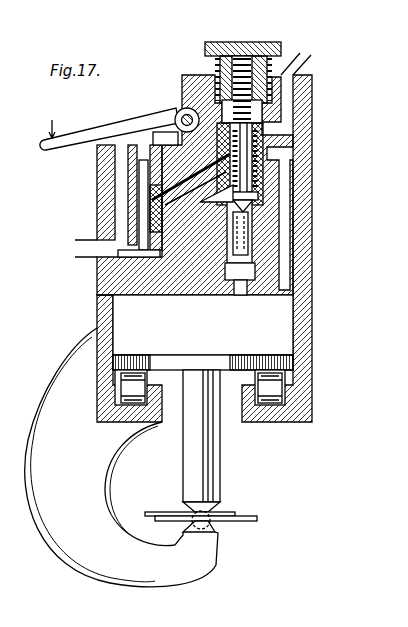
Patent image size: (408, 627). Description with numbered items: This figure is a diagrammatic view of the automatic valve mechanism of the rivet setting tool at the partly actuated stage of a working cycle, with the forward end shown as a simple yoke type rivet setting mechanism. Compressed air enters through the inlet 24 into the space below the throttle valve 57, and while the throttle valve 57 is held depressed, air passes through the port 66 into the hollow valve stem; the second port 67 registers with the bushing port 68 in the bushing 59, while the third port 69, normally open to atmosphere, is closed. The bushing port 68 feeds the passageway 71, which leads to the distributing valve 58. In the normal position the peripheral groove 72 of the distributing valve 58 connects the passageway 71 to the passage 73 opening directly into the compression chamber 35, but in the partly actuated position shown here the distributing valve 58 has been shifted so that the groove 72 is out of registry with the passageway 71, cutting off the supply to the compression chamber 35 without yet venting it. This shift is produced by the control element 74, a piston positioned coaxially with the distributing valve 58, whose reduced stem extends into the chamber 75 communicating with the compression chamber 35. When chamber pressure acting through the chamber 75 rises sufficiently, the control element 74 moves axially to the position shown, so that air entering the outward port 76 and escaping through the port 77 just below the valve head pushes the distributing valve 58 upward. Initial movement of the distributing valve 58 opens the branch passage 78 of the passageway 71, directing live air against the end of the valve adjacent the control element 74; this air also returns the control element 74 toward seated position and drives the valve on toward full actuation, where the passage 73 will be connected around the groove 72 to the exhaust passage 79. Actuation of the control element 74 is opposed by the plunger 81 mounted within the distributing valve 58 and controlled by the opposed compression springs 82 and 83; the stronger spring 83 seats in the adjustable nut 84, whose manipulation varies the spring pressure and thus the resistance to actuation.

The compressed air inlet 24 is at (85, 247).
The compression chamber 35 is at (196, 333).
The throttle valve 57 is at (155, 254).
The distributing valve 58 is at (256, 186).
The bushing 59 is at (115, 180).
The port 66 is at (148, 238).
The second port 67 is at (190, 168).
The bushing port 68 is at (155, 207).
The third port 69 is at (119, 129).
The passageway 71 is at (192, 179).
The peripheral groove 72 is at (222, 157).
The passage 73 is at (290, 154).
The control element 74 is at (252, 205).
The chamber 75 is at (283, 262).
The port 76 is at (233, 237).
The port 77 is at (252, 222).
The branch passage 78 is at (232, 201).
The exhaust passage 79 is at (290, 88).
The plunger 81 is at (277, 137).
The compression spring 82 is at (283, 163).
The compression spring 83 is at (219, 60).
The adjustable nut 84 is at (254, 42).